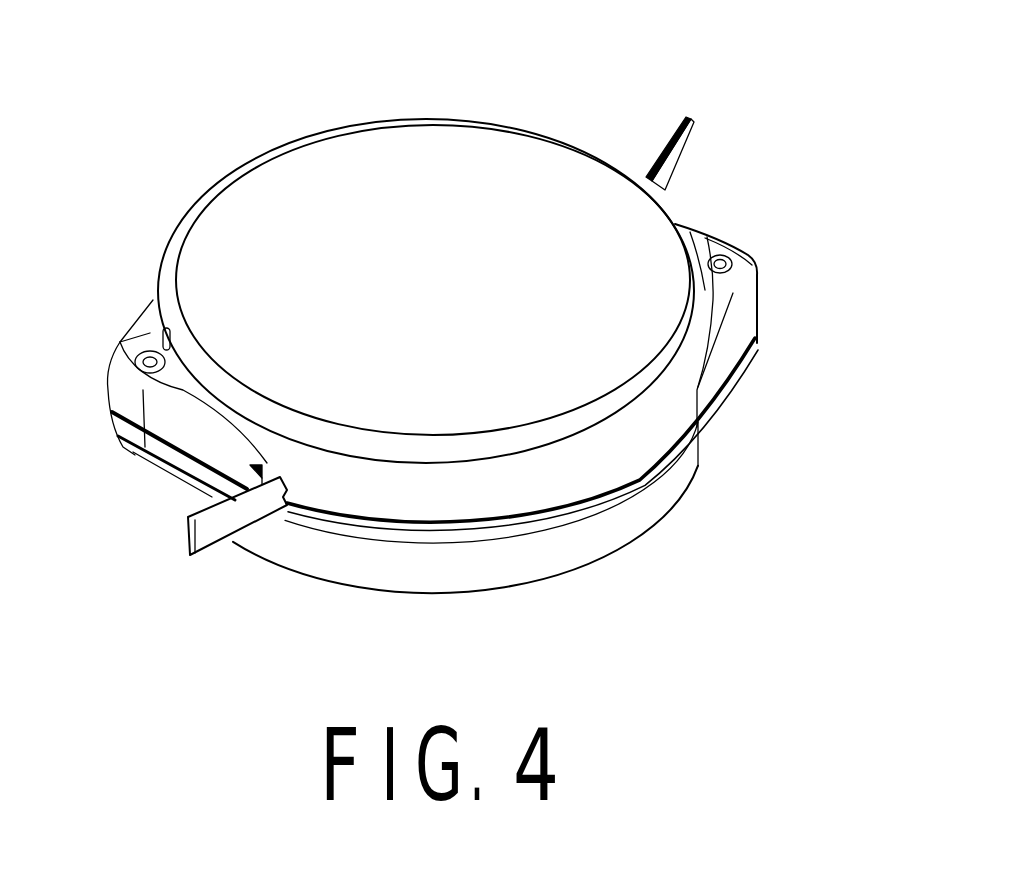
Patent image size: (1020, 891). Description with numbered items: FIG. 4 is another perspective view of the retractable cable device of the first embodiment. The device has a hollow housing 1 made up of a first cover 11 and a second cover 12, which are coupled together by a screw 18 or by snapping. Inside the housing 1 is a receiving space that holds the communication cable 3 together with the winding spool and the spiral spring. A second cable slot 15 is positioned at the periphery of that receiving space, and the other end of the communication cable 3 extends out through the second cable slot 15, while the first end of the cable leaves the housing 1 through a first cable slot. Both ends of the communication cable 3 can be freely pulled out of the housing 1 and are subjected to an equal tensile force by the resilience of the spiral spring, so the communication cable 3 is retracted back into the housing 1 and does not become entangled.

The housing 1 is at (252, 145).
The first cover 11 is at (478, 165).
The second cover 12 is at (575, 537).
The communication cable 3 is at (677, 163).
The second cable slot 15 is at (267, 518).
The screw 18 is at (747, 258).